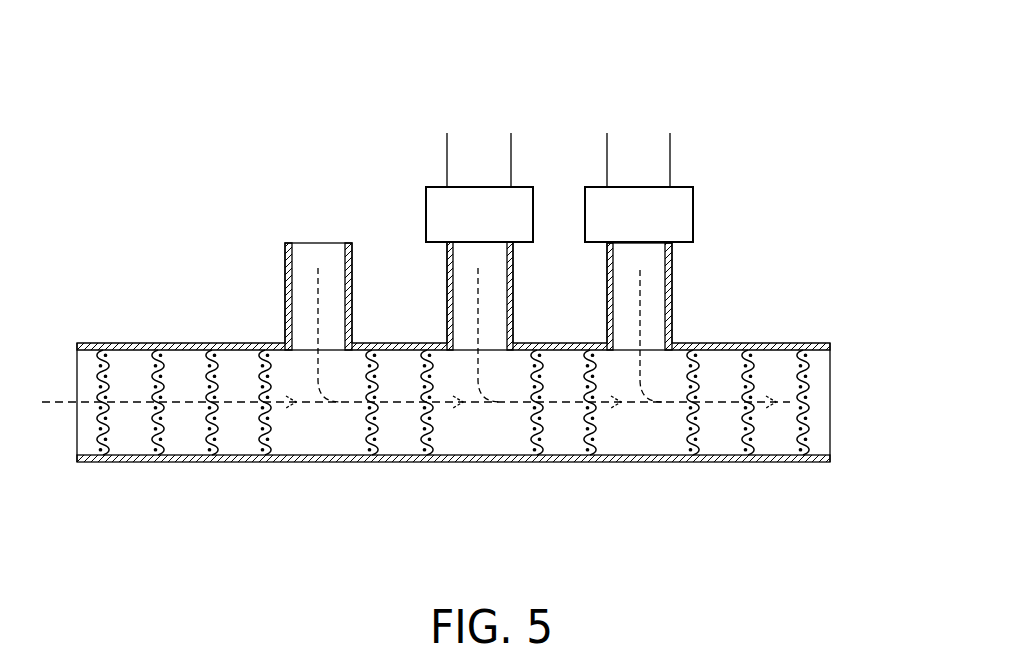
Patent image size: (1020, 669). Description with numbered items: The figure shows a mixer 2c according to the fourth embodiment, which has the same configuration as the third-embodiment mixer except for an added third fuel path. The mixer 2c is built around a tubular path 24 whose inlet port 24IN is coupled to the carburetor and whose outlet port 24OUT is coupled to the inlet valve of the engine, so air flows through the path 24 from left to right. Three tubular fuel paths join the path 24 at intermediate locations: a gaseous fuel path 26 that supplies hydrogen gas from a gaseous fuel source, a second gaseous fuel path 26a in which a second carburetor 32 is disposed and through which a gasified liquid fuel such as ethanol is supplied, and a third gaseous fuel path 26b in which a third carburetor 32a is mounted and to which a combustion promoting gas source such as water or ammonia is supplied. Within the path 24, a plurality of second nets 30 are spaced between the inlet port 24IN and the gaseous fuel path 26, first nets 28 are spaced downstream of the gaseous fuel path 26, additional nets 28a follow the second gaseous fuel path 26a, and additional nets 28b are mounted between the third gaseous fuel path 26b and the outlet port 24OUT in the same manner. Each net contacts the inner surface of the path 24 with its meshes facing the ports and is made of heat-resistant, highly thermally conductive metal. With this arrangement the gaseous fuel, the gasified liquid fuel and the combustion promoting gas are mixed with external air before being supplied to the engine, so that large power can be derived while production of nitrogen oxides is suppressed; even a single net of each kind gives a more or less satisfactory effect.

The mixer 2c is at (207, 279).
The path 24 is at (313, 428).
The inlet port 24IN is at (85, 430).
The outlet port 24OUT is at (873, 410).
The gaseous fuel path 26 is at (327, 310).
The second gaseous fuel path 26a is at (498, 307).
The third gaseous fuel path 26b is at (648, 300).
The first nets 28 is at (375, 415).
The additional nets 28a is at (540, 415).
The additional nets 28b is at (697, 420).
The second nets 30 is at (260, 440).
The second carburetor 32 is at (443, 218).
The third carburetor 32a is at (668, 217).